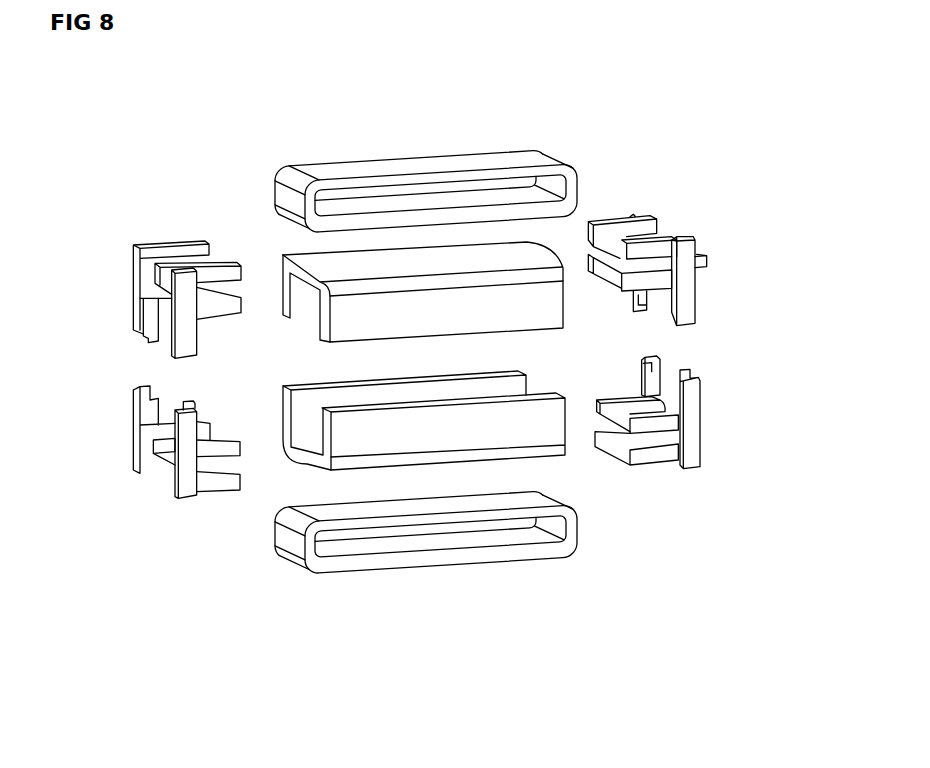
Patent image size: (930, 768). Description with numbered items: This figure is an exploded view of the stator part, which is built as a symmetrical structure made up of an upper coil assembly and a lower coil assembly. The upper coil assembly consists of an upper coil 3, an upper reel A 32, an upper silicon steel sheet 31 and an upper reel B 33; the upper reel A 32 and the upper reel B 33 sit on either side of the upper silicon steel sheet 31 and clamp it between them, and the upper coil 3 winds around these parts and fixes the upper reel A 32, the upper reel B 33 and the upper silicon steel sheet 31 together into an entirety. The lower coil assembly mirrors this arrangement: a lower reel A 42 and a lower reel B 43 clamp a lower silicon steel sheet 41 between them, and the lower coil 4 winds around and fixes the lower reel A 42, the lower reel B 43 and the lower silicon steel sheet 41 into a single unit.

The upper coil 3 is at (437, 163).
The upper silicon steel sheet 31 is at (333, 268).
The upper reel A 32 is at (148, 275).
The upper reel B 33 is at (687, 270).
The lower coil 4 is at (347, 550).
The lower silicon steel sheet 41 is at (455, 430).
The lower reel A 42 is at (153, 463).
The lower reel B 43 is at (692, 430).